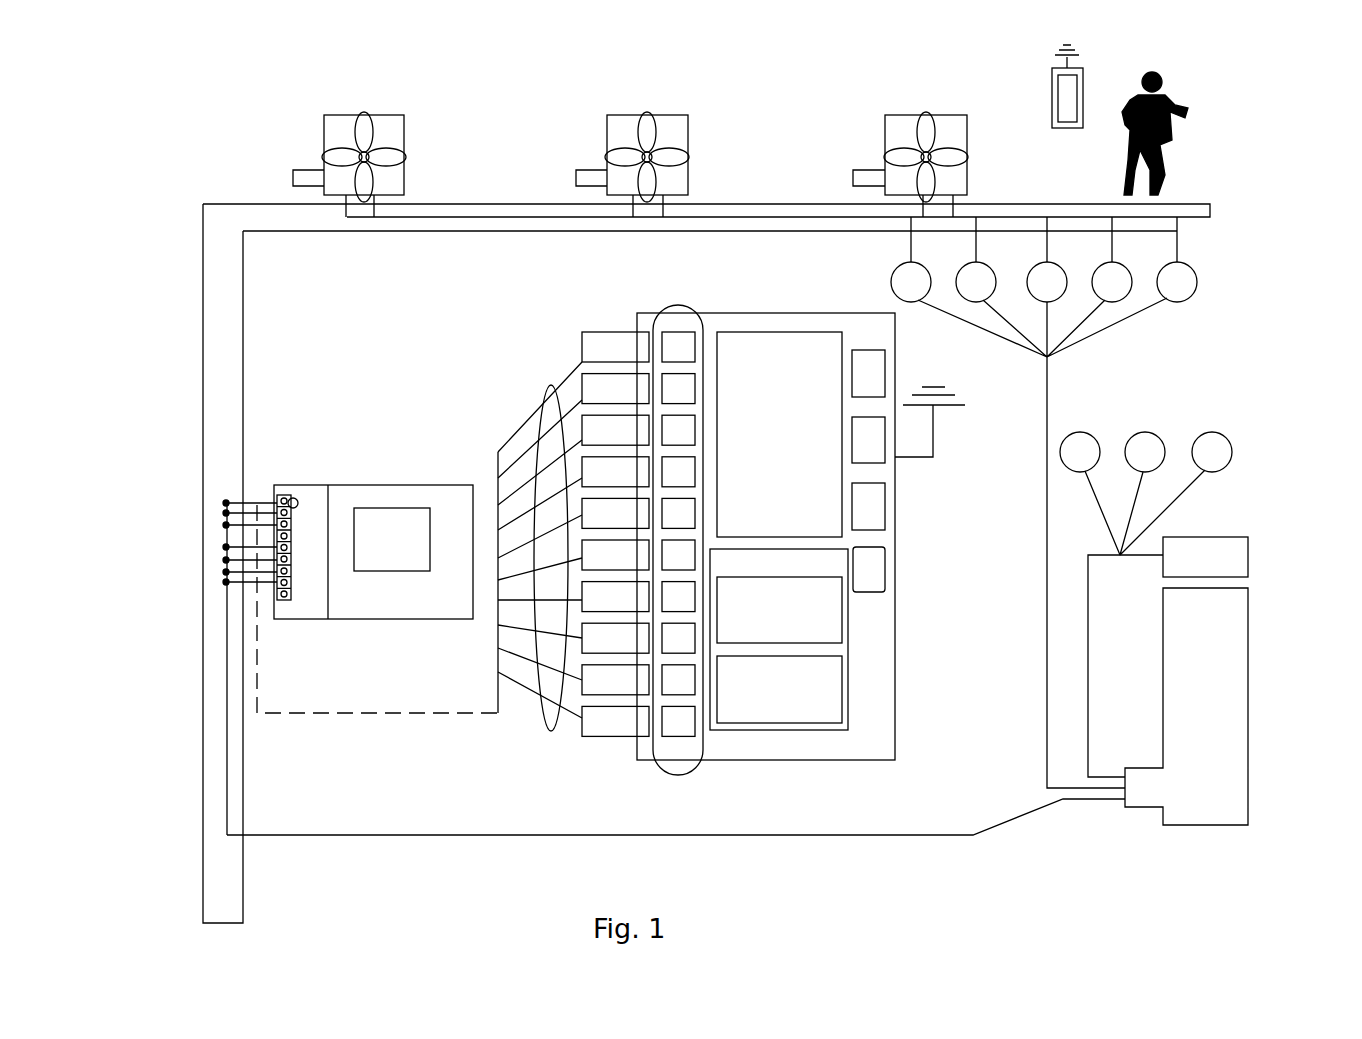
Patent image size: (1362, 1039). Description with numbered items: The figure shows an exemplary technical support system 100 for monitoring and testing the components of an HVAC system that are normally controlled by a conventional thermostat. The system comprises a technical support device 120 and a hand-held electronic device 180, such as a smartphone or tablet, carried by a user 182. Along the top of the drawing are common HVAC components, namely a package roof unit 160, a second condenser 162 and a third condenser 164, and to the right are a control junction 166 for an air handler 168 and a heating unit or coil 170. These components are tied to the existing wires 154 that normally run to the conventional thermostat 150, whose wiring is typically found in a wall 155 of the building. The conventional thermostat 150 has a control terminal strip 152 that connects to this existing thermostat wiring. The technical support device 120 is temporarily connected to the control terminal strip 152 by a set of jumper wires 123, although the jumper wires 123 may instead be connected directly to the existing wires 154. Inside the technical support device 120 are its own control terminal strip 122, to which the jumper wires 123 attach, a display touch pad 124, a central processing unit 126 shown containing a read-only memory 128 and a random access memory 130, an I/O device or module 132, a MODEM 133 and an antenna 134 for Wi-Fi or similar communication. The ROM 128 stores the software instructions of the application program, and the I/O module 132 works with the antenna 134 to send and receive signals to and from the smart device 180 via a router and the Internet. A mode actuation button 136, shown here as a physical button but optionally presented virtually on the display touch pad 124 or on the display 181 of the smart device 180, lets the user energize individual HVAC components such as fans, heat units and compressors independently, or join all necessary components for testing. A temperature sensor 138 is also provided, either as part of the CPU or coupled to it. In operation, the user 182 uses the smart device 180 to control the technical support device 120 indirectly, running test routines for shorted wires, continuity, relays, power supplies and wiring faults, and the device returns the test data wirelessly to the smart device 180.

The technical support system 100 is at (157, 260).
The technical support device 120 is at (895, 648).
The control terminal strip 122 is at (670, 775).
The jumper wires 123 is at (548, 730).
The display touch pad 124 is at (762, 332).
The central processing unit 126 is at (848, 713).
The read-only memory 128 is at (830, 620).
The random access memory 130 is at (830, 703).
The I/O device or module 132 is at (867, 507).
The MODEM 133 is at (875, 573).
The antenna 134 is at (933, 440).
The mode actuation button 136 is at (867, 380).
The temperature sensor 138 is at (868, 443).
The conventional thermostat 150 is at (397, 619).
The control terminal strip 152 is at (283, 495).
The existing wires 154 is at (528, 217).
The wall 155 is at (237, 778).
The package roof unit 160 is at (404, 173).
The condenser 2 162 is at (688, 173).
The condenser 3 164 is at (967, 178).
The control junction 166 is at (1140, 807).
The air handler 168 is at (287, 204).
The heating unit or coil 170 is at (1248, 558).
The hand-held electronic device 180 is at (1083, 70).
The display 181 is at (1067, 97).
The user 182 is at (1183, 103).